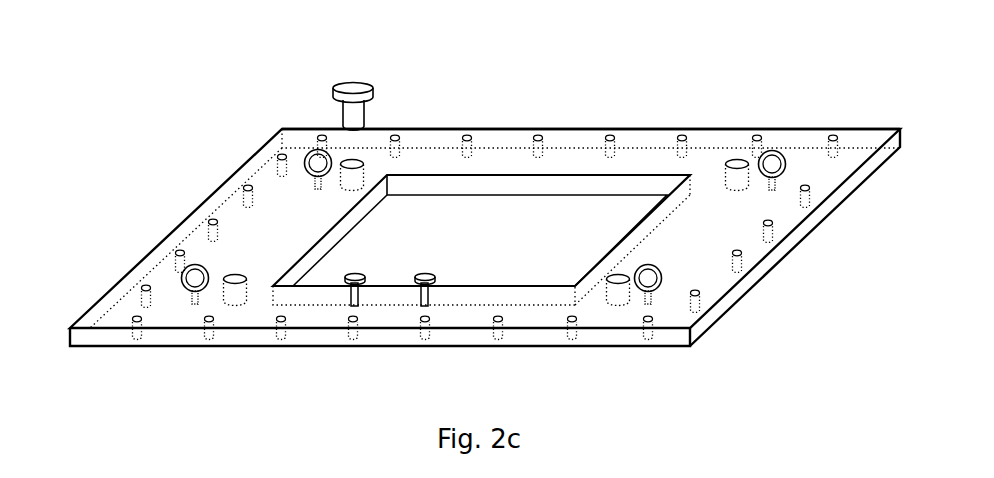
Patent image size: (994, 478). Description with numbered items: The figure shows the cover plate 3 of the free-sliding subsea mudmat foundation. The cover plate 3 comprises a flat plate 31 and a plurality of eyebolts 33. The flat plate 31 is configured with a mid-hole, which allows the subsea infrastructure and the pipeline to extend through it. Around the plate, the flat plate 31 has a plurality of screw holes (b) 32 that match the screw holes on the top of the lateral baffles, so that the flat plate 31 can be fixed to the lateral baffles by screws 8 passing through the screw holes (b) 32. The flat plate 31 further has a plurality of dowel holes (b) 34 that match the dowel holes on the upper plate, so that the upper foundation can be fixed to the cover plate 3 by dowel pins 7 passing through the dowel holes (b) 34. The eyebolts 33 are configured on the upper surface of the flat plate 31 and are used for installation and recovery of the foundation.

The cover plate 3 is at (140, 216).
The dowel pins 7 is at (327, 88).
The screws 8 is at (364, 295).
The flat plate 31 is at (580, 127).
The screw holes (b) 32 is at (826, 136).
The eyebolts 33 is at (306, 155).
The dowel holes (b) 34 is at (749, 183).